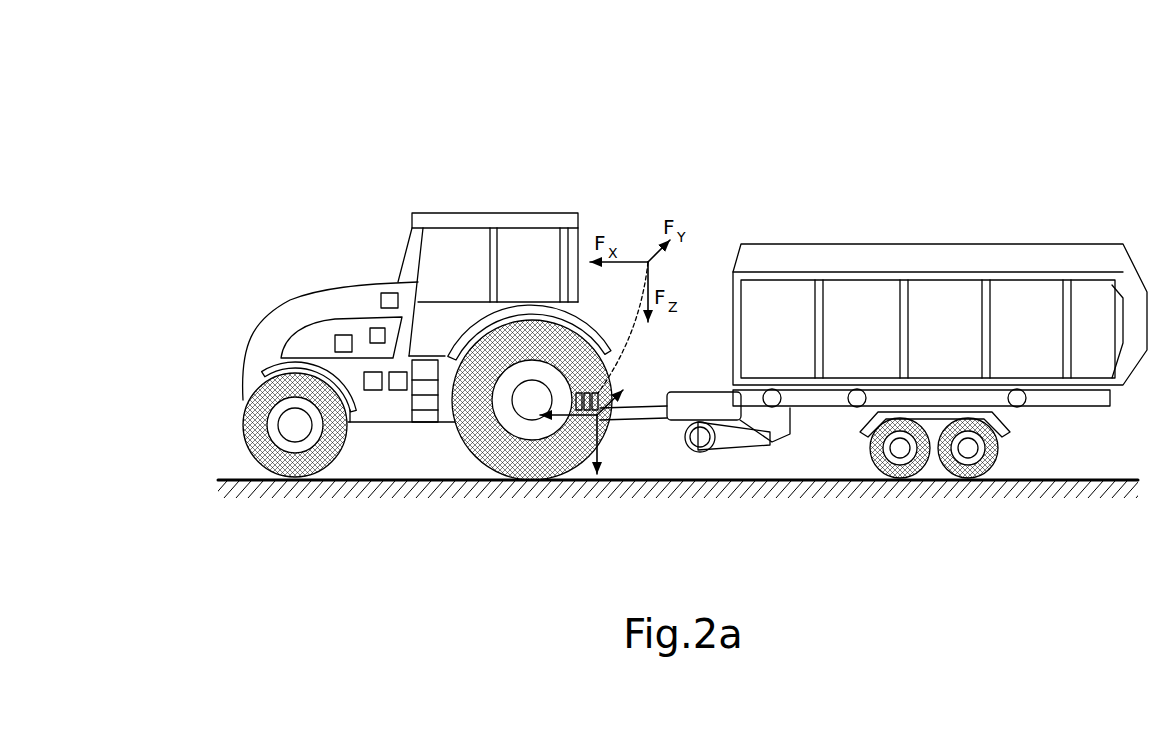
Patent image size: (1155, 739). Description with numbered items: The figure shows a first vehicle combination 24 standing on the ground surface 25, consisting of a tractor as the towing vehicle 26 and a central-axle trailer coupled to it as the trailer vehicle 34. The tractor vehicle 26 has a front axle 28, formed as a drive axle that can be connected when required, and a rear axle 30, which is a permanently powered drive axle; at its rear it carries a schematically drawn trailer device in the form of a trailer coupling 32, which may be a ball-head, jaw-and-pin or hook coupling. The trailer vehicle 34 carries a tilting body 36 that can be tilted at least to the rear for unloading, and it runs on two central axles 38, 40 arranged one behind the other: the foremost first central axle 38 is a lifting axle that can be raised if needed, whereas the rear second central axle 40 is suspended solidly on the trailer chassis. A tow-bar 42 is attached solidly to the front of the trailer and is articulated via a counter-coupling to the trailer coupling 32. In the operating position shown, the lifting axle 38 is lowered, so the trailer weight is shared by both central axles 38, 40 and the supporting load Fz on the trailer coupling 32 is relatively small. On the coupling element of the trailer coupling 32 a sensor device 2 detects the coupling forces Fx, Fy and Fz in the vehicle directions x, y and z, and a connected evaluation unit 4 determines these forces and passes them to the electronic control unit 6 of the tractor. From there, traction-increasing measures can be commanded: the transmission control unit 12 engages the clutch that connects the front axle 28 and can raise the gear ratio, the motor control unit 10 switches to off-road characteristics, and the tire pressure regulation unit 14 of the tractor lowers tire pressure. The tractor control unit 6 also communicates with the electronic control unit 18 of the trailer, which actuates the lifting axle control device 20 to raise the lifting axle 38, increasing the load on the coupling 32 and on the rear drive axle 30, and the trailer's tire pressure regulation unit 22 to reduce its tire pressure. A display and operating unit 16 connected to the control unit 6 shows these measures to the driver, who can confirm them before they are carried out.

The sensor device 2 is at (593, 392).
The evaluation unit 4 is at (580, 392).
The electronic control unit 6 is at (372, 330).
The motor control unit 10 is at (335, 340).
The transmission control unit 12 is at (372, 390).
The tire pressure regulation unit 14 is at (398, 390).
The display and operating unit 16 is at (391, 293).
The electronic control unit 18 is at (770, 407).
The lifting axle control device 20 is at (856, 407).
The tire pressure regulation unit 22 is at (1018, 407).
The first vehicle combination 24 is at (750, 192).
The ground 25 is at (240, 482).
The tractor vehicle 26 is at (460, 192).
The front axle 28 is at (296, 440).
The rear axle 30 is at (530, 415).
The trailer coupling 32 is at (584, 430).
The trailer vehicle 34 is at (915, 192).
The tilting body 36 is at (942, 244).
The first central axle 38 is at (900, 455).
The second central axle 40 is at (968, 455).
The tow-bar 42 is at (630, 420).